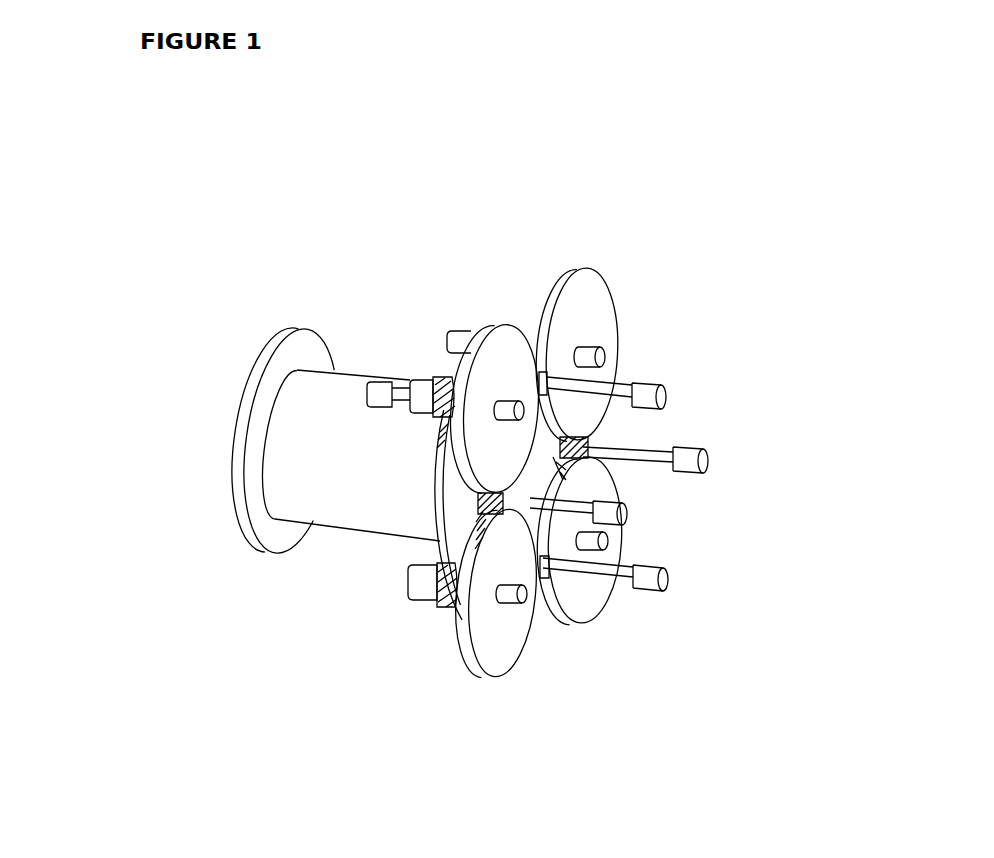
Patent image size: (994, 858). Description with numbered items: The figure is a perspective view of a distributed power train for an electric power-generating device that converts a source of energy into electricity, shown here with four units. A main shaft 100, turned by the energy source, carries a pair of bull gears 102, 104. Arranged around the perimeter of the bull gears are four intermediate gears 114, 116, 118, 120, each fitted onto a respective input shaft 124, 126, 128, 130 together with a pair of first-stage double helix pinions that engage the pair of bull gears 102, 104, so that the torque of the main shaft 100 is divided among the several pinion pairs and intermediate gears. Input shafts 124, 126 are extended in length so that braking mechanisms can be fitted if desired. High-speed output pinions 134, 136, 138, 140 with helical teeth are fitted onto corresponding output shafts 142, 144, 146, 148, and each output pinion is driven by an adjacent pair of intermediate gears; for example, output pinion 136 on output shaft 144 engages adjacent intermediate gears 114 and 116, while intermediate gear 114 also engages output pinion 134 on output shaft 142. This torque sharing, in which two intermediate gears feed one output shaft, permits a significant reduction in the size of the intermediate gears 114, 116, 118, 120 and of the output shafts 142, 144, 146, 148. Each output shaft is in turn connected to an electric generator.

The main shaft 100 is at (270, 445).
The bull gear 102 is at (438, 500).
The bull gear 104 is at (458, 530).
The intermediate gear 114 is at (503, 340).
The intermediate gear 116 is at (595, 295).
The intermediate gear 118 is at (573, 620).
The intermediate gear 120 is at (495, 676).
The input shaft 124 is at (367, 378).
The input shaft 126 is at (450, 330).
The input shaft 128 is at (608, 541).
The input shaft 130 is at (408, 595).
The output pinion 134 is at (462, 640).
The output pinion 136 is at (543, 370).
The output pinion 138 is at (588, 442).
The output pinion 140 is at (550, 573).
The output shaft 142 is at (627, 512).
The output shaft 144 is at (667, 388).
The output shaft 146 is at (710, 463).
The output shaft 148 is at (667, 587).